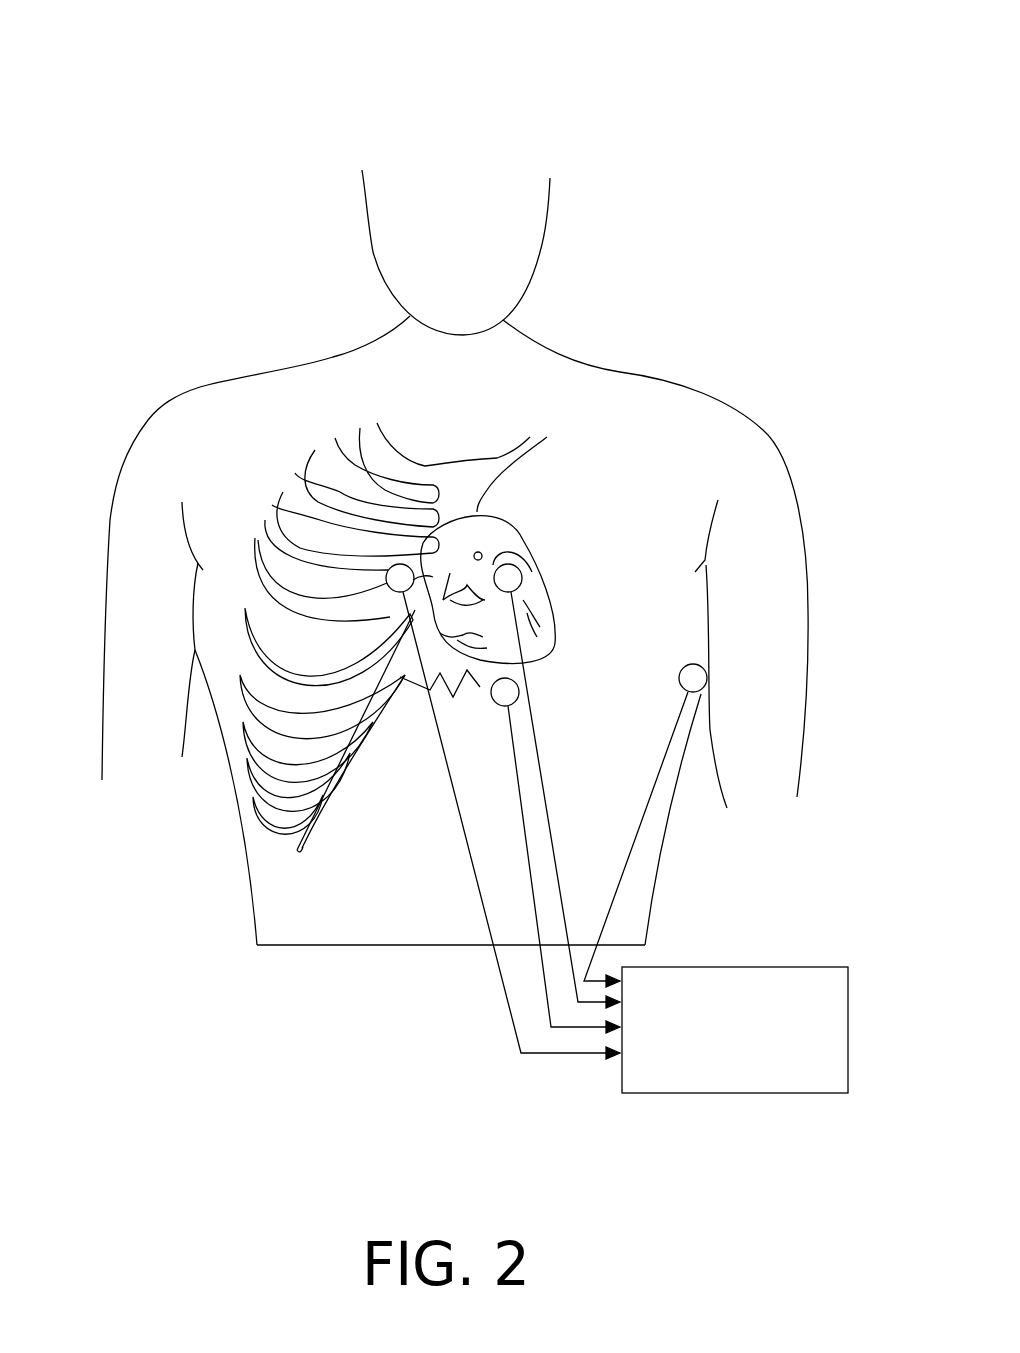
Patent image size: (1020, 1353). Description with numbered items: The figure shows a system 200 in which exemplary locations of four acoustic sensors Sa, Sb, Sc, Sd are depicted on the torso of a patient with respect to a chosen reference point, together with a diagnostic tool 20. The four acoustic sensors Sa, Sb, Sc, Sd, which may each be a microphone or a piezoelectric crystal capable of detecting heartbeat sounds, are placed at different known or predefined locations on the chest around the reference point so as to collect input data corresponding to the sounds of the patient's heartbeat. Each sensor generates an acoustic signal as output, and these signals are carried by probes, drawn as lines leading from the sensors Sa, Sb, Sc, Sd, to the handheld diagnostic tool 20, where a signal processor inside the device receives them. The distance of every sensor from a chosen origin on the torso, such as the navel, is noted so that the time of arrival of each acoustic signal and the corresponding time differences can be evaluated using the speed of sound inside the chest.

The ECG sensing system 200 is at (757, 49).
The diagnostic tool 20 is at (735, 1030).
The acoustic sensor Sa is at (522, 578).
The acoustic sensor Sb is at (519, 692).
The acoustic sensor Sc is at (707, 676).
The acoustic sensor Sd is at (386, 578).